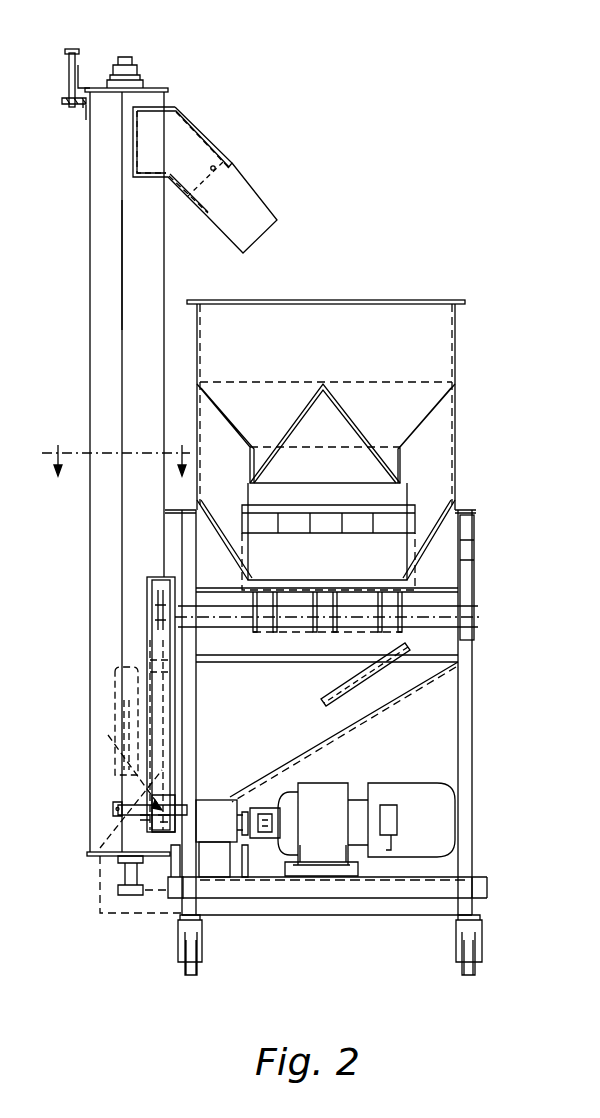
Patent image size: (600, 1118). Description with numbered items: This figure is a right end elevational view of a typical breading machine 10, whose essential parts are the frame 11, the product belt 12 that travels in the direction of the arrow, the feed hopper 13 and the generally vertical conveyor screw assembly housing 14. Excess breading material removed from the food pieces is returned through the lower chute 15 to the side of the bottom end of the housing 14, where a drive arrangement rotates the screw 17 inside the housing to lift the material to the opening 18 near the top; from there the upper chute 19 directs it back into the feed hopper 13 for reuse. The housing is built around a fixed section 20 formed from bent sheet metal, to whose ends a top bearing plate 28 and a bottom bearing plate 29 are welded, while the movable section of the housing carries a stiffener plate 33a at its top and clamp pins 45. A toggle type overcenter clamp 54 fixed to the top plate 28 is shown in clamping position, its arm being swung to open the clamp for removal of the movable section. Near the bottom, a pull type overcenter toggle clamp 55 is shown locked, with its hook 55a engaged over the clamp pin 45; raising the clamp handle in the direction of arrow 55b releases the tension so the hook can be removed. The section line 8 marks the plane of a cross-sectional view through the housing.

The breading machine 10 is at (352, 926).
The frame 11 is at (475, 800).
The product belt 12 is at (385, 515).
The feed hopper 13 is at (457, 352).
The vertical conveyor screw assembly housing 14 is at (86, 262).
The chute 15 is at (355, 720).
The screw 17 is at (108, 735).
The opening 18 is at (160, 115).
The chute 19 is at (213, 150).
The fixed section 20 is at (160, 258).
The top bearing plate 28 is at (155, 88).
The bottom bearing plate 29 is at (92, 856).
The stiffener plate 33a is at (86, 118).
The clamp pin 45 is at (113, 808).
The toggle type overcenter clamp 54 is at (72, 50).
The pull type overcenter toggle clamp 55 is at (126, 798).
The hook 55a is at (130, 816).
The arrow 55b is at (186, 800).
The section line 8- 8 is at (116, 476).